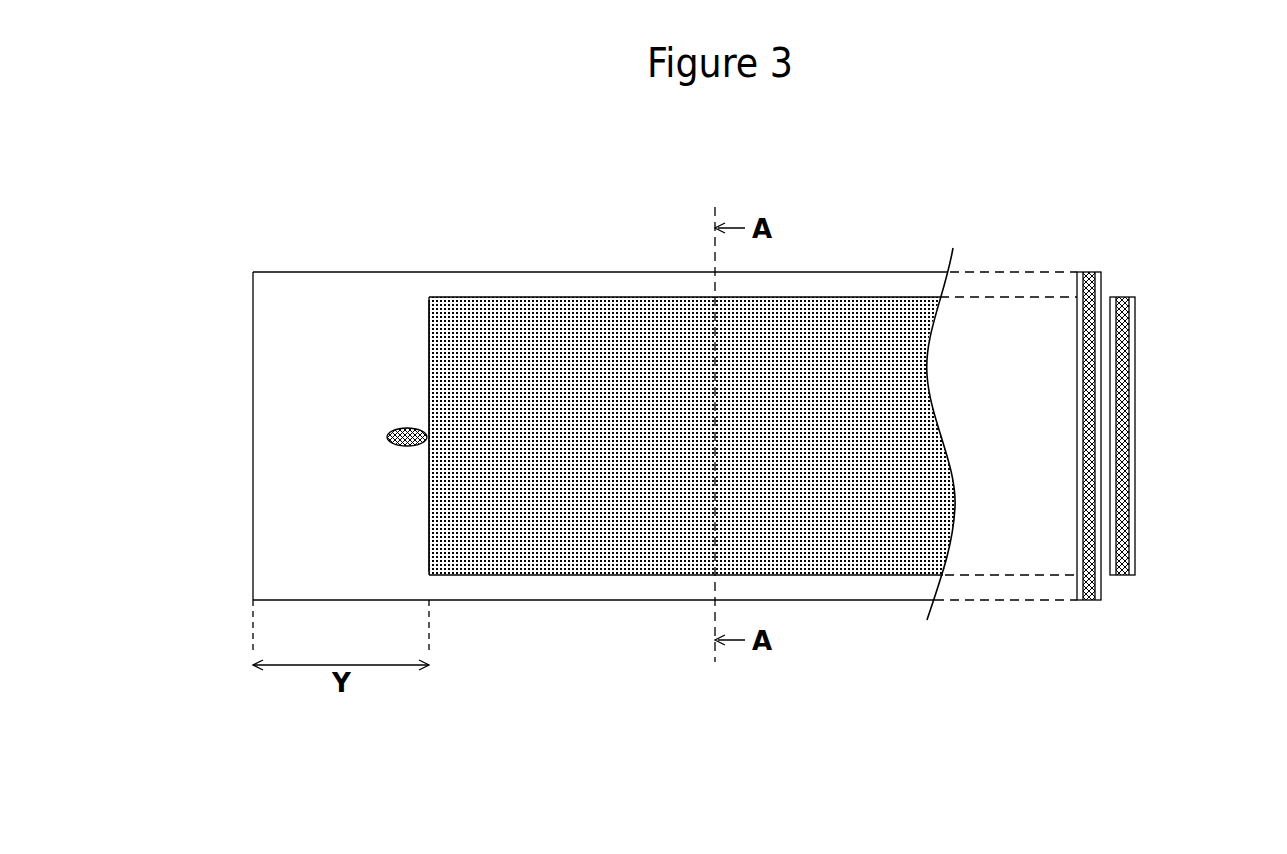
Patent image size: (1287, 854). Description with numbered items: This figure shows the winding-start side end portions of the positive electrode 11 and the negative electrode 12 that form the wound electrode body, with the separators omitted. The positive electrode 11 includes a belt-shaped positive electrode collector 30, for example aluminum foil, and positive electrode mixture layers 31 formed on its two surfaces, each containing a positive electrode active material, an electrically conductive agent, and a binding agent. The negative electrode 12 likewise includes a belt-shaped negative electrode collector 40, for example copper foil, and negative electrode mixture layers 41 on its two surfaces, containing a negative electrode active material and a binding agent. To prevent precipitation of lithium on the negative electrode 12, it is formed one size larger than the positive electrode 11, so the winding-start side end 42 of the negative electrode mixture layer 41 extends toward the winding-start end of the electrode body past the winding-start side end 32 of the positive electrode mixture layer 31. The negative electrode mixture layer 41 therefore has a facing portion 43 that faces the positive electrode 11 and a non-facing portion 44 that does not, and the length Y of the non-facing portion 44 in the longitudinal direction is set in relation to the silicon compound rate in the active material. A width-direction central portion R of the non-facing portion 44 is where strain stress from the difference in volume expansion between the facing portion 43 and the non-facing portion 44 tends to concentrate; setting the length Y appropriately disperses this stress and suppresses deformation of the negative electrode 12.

The positive electrode 11 is at (1137, 410).
The negative electrode 12 is at (1077, 410).
The positive electrode collector 30 is at (1125, 297).
The positive electrode mixture layer 31 is at (891, 307).
The winding-start side end of the positive electrode mixture layer 32 is at (428, 493).
The negative electrode collector 40 is at (1087, 600).
The negative electrode mixture layer 41 is at (867, 592).
The winding-start side end of the negative electrode mixture layer 42 is at (253, 372).
The facing portion 43 is at (615, 272).
The non-facing portion 44 is at (315, 272).
The width-direction central portion R is at (408, 427).